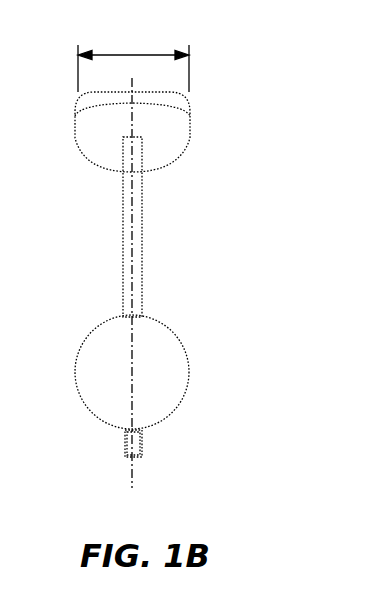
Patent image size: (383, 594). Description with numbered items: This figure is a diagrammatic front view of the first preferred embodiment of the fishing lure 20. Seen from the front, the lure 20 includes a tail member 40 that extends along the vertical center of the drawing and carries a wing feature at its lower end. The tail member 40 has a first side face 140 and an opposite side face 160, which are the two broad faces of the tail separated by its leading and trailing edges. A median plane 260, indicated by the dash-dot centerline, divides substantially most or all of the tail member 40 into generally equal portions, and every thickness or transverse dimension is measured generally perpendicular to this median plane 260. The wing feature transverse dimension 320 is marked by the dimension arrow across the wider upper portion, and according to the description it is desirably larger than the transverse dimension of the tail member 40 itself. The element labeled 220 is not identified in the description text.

The fishing lure 20 is at (236, 200).
The tail member 40 is at (137, 213).
The first side face 140 is at (153, 254).
The opposite side face 160 is at (116, 241).
The valve head 220 is at (172, 127).
The median plane 260 is at (132, 473).
The wing feature transverse dimension 320 is at (150, 53).